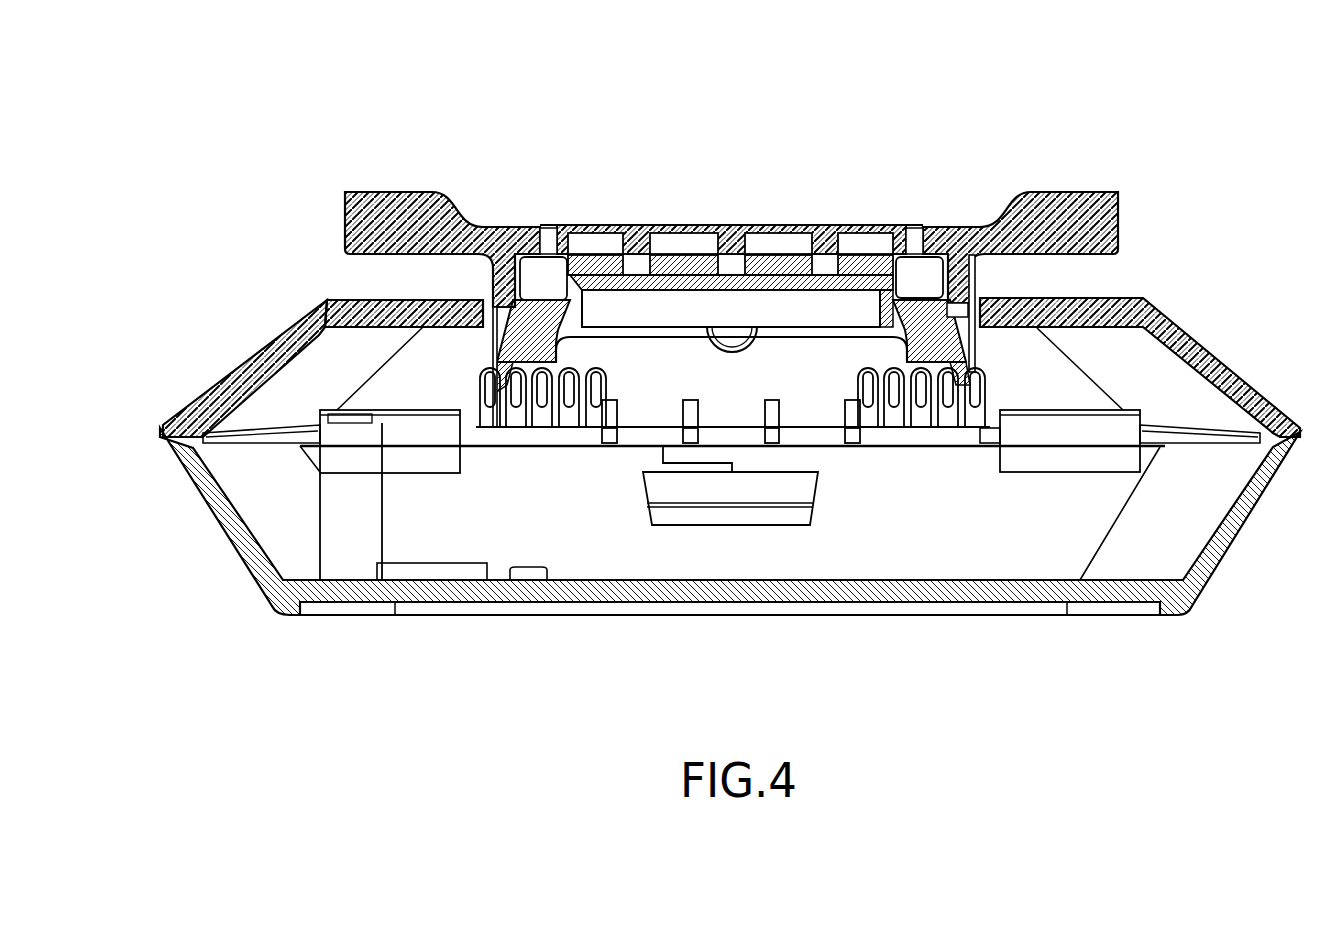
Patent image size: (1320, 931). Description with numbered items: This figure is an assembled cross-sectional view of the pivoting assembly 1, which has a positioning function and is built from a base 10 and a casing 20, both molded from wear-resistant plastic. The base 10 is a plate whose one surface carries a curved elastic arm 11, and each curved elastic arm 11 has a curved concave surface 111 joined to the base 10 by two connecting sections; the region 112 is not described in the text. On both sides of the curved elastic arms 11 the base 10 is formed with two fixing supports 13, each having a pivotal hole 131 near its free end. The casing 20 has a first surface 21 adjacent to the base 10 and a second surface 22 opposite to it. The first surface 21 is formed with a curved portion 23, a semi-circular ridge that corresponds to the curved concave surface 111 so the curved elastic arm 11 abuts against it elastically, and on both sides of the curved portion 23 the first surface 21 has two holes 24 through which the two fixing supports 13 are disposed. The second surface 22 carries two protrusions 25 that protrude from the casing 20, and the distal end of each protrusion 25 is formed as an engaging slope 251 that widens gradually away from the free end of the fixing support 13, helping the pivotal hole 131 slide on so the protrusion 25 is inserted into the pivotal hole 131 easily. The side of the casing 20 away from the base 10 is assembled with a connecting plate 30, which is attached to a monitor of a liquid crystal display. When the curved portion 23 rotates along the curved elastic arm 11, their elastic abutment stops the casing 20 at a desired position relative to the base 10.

The pivoting assembly 1 is at (238, 150).
The base 10 is at (384, 207).
The curved elastic arm 11 is at (731, 170).
The curved concave surface 111 is at (608, 262).
The through holes 112 is at (586, 243).
The fixing support 13 is at (980, 272).
The pivotal hole 131 is at (962, 317).
The casing 20 is at (292, 338).
The first surface 21 is at (355, 300).
The second surface 22 is at (370, 328).
The curved portion 23 is at (828, 282).
The hole 24 is at (982, 303).
The protrusion 25 is at (918, 345).
The engaging slope 251 is at (970, 340).
The connecting plate 30 is at (233, 538).